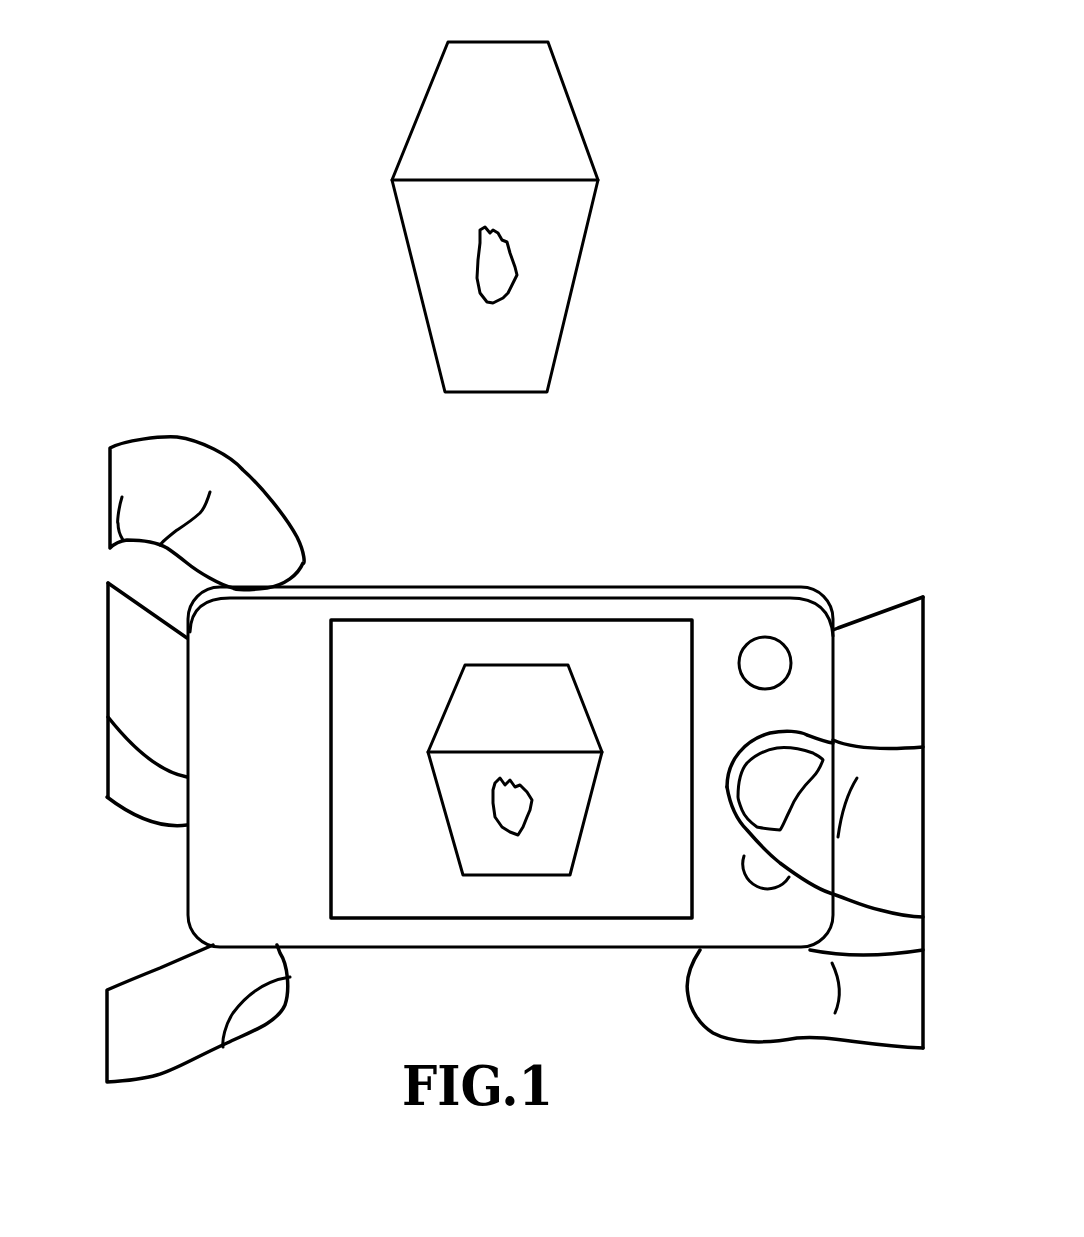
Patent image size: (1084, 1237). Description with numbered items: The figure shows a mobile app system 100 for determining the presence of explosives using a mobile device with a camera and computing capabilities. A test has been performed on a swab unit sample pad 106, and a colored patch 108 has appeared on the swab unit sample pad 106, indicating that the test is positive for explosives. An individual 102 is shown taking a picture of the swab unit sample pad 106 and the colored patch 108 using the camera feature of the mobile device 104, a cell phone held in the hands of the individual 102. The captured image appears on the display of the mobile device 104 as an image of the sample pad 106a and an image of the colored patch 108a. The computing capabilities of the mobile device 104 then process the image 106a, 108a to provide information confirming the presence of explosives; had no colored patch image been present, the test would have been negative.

The mobile app system 100 is at (672, 50).
The individual 102 is at (898, 867).
The mobile device 104 is at (727, 588).
The swab unit sample pad 106 is at (522, 118).
The image of swab unit sample pad 106a is at (555, 722).
The colored patch 108 is at (517, 275).
The image of colored patch 108a is at (530, 815).